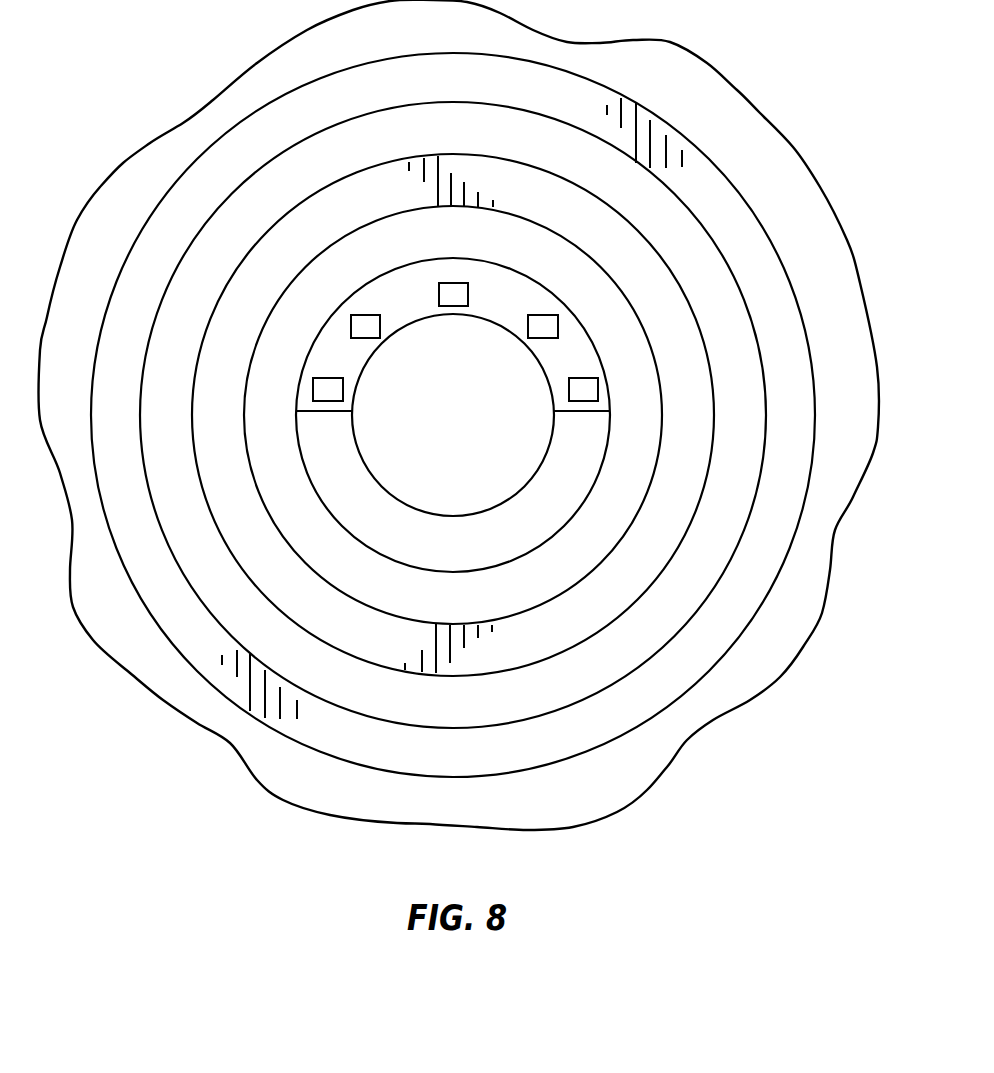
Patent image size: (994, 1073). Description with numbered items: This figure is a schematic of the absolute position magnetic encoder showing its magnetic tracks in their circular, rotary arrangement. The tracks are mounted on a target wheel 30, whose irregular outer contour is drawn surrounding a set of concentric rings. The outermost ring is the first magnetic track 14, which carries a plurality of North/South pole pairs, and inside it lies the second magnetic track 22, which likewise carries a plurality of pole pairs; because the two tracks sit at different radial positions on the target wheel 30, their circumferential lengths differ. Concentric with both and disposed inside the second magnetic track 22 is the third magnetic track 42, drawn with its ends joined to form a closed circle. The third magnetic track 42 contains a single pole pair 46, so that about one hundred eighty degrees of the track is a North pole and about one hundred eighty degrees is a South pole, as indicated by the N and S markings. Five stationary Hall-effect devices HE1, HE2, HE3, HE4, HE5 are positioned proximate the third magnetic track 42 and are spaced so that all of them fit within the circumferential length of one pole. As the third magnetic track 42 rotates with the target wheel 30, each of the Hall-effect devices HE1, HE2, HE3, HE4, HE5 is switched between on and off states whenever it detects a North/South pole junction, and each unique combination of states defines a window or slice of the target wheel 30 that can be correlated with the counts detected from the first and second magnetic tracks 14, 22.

The first magnetic track 14 is at (733, 169).
The second magnetic track 22 is at (713, 343).
The target wheel 30 is at (780, 627).
The third magnetic track 42 is at (583, 307).
The single pole pair 46 is at (498, 507).
The Hall-effect device HE1 is at (343, 388).
The Hall-effect device HE2 is at (378, 327).
The Hall-effect device HE3 is at (451, 306).
The Hall-effect device HE4 is at (530, 327).
The Hall-effect device HE5 is at (569, 388).